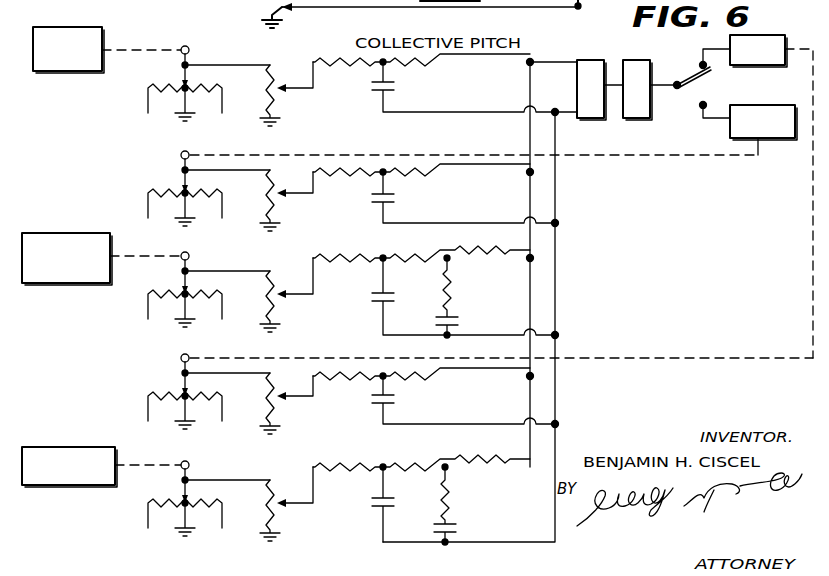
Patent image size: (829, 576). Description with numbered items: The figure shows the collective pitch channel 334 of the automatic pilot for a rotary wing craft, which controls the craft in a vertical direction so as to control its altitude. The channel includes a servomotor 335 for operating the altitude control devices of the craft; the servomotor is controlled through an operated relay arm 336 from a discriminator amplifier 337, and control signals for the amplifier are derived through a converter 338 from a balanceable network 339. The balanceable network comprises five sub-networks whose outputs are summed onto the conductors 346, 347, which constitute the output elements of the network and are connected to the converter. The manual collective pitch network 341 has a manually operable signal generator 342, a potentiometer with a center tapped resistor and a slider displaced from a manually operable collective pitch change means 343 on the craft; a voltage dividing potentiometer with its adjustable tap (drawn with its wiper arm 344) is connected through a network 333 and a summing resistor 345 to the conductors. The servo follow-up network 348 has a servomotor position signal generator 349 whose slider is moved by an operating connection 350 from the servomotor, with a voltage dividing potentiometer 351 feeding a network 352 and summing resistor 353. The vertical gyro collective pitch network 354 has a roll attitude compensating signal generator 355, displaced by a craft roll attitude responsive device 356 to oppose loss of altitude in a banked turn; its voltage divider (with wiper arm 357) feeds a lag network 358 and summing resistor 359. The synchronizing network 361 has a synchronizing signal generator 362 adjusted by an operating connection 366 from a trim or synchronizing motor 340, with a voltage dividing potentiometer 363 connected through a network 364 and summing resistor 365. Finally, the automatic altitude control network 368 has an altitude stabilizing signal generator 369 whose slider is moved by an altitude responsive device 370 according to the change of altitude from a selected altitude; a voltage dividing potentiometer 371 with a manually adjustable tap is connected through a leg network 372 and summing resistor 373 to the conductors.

The network 333 is at (360, 96).
The collective pitch channel 334 is at (676, 286).
The servomotor 335 is at (780, 140).
The relay arm 336 is at (690, 70).
The discriminator amplifier 337 is at (641, 120).
The converter 338 is at (592, 120).
The balanceable network 339 is at (91, 163).
The trim or synchronizing motor 340 is at (746, 67).
The manual collective pitch network 341 is at (284, 86).
The manually operable signal generator 342 is at (201, 87).
The collective pitch change means 343 is at (61, 73).
The wiper arm 344 is at (287, 97).
The summing resistor 345 is at (456, 75).
The conductor 346 is at (530, 94).
The conductor 347 is at (556, 198).
The servo follow-up network 348 is at (284, 196).
The servomotor position signal generator 349 is at (200, 192).
The operating connection 350 is at (351, 156).
The voltage dividing potentiometer 351 is at (290, 206).
The network 352 is at (359, 204).
The summing resistor 353 is at (428, 175).
The vertical gyro collective pitch network 354 is at (282, 289).
The roll attitude compensating signal generator 355 is at (201, 293).
The craft roll attitude responsive device 356 is at (58, 285).
The wiper arm 357 is at (289, 307).
The lag network 358 is at (428, 290).
The summing resistor 359 is at (483, 264).
The synchronizing network 361 is at (284, 395).
The synchronizing signal generator 362 is at (198, 395).
The voltage dividing potentiometer 363 is at (287, 407).
The network 364 is at (363, 405).
The summing resistor 365 is at (428, 380).
The operating connection 366 is at (353, 358).
The automatic altitude control network 368 is at (280, 496).
The altitude stabilizing signal generator 369 is at (199, 502).
The altitude responsive device 370 is at (72, 487).
The voltage dividing potentiometer 371 is at (284, 514).
The leg network 372 is at (428, 496).
The summing resistor 373 is at (481, 470).